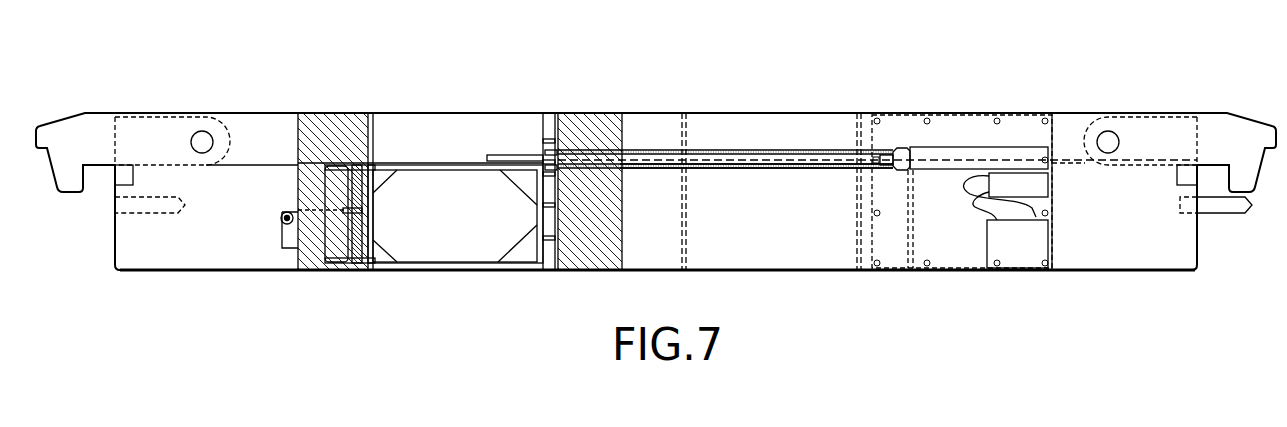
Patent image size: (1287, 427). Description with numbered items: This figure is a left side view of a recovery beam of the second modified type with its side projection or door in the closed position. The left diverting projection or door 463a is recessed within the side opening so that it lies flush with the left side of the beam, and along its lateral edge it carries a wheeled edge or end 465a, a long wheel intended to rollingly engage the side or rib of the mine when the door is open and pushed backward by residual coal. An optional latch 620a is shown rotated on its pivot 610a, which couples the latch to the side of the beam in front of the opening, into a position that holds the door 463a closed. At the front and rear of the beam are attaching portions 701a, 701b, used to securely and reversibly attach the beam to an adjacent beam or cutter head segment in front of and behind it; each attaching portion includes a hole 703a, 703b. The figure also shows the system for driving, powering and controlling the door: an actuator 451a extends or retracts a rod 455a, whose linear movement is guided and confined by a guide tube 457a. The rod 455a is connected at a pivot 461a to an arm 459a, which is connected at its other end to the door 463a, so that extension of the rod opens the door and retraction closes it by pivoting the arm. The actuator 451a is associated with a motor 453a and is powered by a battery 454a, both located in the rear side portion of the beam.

The attaching portion 701a is at (95, 135).
The attaching portion 701b is at (1155, 133).
The left mounting tab with hole 703a is at (202, 137).
The right mounting tab with hole 703b is at (1108, 137).
The wheeled edge or end 465a is at (335, 180).
The latch 620a is at (338, 218).
The pivot 610a is at (284, 224).
The left diverting projection or door 463a is at (442, 228).
The arm 459a is at (502, 162).
The pivot 461a is at (553, 150).
The rod 455a is at (735, 162).
The guide tube 457a is at (777, 173).
The actuator 451a is at (963, 155).
The motor 453a is at (1035, 185).
The battery 454a is at (1020, 250).